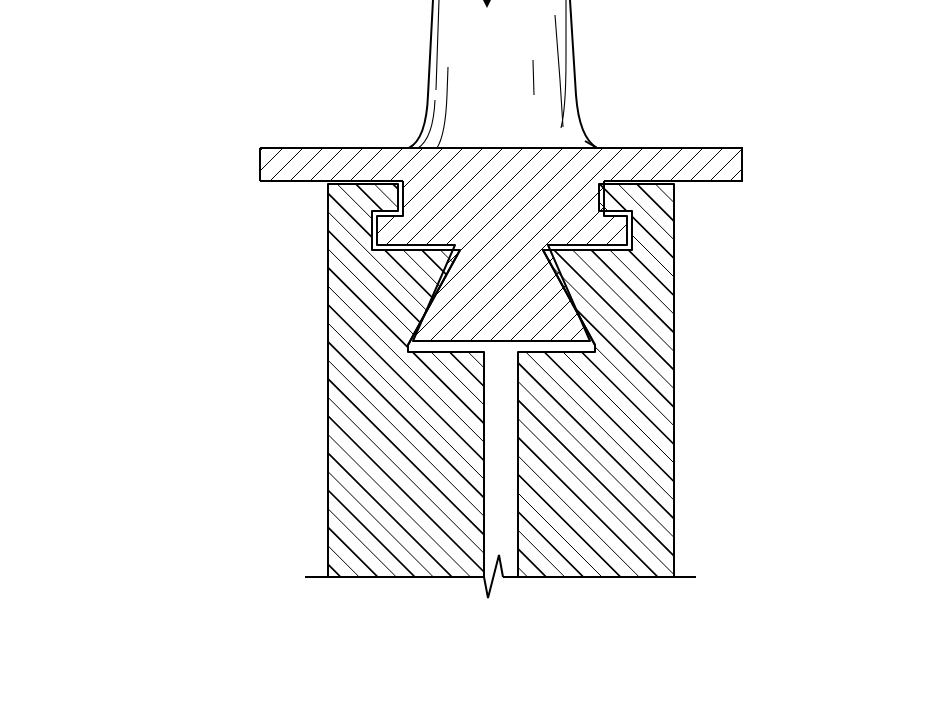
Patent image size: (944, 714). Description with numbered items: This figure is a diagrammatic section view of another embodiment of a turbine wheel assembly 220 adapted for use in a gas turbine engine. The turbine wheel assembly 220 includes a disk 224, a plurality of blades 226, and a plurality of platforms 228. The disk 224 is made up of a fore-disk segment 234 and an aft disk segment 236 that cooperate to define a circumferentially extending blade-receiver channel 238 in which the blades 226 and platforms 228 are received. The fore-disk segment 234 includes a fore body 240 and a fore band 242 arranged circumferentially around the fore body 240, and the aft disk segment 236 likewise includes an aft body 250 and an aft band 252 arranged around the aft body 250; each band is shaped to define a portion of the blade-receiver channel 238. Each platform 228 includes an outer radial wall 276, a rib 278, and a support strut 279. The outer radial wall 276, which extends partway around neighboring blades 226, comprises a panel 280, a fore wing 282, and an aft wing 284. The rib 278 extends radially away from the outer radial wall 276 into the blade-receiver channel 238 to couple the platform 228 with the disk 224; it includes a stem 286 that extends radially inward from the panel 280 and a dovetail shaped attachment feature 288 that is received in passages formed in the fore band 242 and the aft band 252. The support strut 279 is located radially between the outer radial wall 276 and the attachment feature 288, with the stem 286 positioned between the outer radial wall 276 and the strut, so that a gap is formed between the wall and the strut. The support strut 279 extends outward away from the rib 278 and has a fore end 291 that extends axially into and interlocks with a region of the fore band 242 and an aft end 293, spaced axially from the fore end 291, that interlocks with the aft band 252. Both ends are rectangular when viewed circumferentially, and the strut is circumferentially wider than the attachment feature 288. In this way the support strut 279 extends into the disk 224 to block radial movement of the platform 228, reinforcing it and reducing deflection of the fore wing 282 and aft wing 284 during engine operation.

The turbine wheel assembly 220 is at (137, 112).
The disk 224 is at (328, 482).
The blades 226 is at (429, 51).
The platforms 228 is at (700, 147).
The fore-disk segment 234 is at (328, 375).
The aft disk segment 236 is at (684, 495).
The blade-receiver channel 238 is at (497, 353).
The fore body 240 is at (387, 547).
The fore band 242 is at (355, 268).
The aft body 250 is at (652, 547).
The aft band 252 is at (658, 327).
The outer radial wall 276 is at (254, 166).
The rib 278 is at (401, 333).
The support strut 279 is at (637, 236).
The panel 280 is at (568, 145).
The fore wing 282 is at (292, 138).
The aft wing 284 is at (733, 147).
The stem 286 is at (571, 195).
The attachment feature 288 is at (577, 334).
The fore end 291 is at (366, 228).
The aft end 293 is at (609, 254).